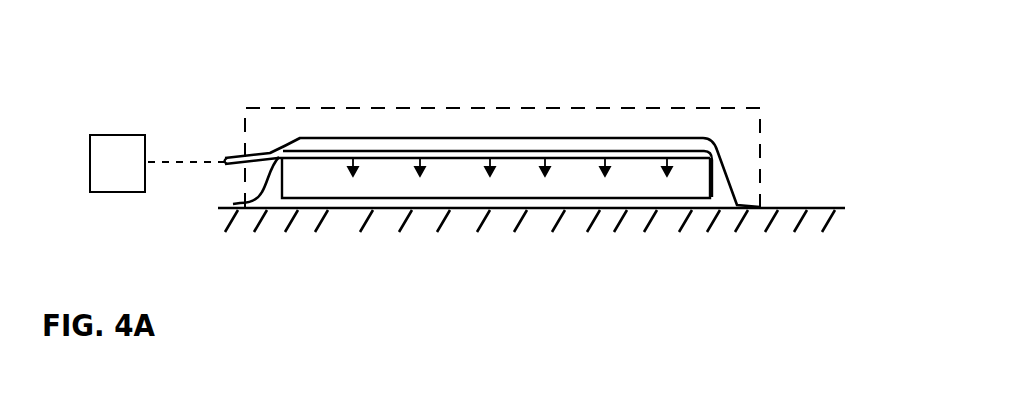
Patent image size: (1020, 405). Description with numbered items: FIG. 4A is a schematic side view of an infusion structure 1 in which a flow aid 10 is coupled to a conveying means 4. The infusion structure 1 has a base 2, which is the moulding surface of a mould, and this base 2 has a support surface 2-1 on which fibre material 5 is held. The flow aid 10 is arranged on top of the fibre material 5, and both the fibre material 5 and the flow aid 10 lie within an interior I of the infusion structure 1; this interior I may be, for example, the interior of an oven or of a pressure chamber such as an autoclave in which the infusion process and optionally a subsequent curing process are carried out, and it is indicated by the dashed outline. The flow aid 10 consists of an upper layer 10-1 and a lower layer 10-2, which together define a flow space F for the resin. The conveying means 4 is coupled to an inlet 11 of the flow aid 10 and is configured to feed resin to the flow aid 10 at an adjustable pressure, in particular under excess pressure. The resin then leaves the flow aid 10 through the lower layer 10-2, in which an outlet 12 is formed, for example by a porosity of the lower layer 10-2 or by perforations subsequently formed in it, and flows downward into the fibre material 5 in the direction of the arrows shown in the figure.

The infusion structure 1 is at (772, 60).
The base 2 is at (532, 219).
The support surface 2-1 is at (802, 207).
The conveying means 4 is at (159, 163).
The fibre material 5 is at (480, 196).
The flow aid 10 is at (480, 124).
The upper layer 10-1 is at (610, 140).
The lower layer 10-2 is at (383, 151).
The inlet 11 is at (237, 156).
The outlet 12 is at (354, 158).
The flow space F is at (493, 158).
The interior I is at (745, 134).